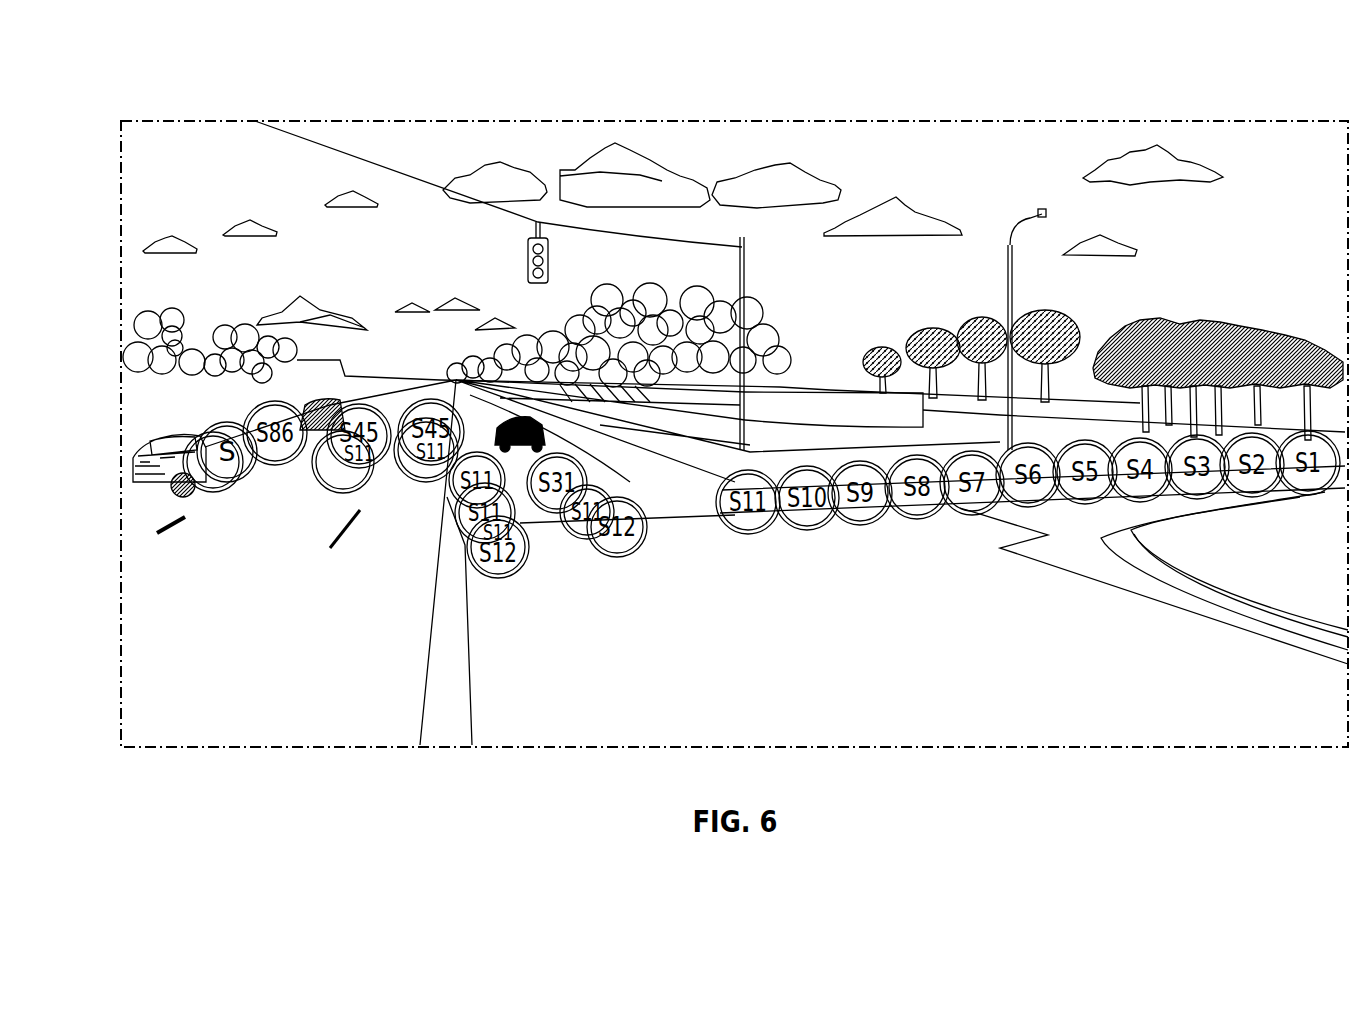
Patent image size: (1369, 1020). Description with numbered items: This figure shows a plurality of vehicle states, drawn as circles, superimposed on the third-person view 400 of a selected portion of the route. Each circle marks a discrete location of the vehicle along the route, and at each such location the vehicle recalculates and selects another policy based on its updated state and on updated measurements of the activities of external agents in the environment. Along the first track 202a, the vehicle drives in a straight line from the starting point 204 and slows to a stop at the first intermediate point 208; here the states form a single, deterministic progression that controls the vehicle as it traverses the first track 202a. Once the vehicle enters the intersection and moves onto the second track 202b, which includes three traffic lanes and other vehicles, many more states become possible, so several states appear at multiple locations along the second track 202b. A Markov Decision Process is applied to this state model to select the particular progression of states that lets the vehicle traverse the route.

The third-person view 400 is at (150, 84).
The first track 202a is at (692, 525).
The second track 202b is at (412, 380).
The starting point 204 is at (1336, 490).
The first intermediate point 208 is at (433, 530).